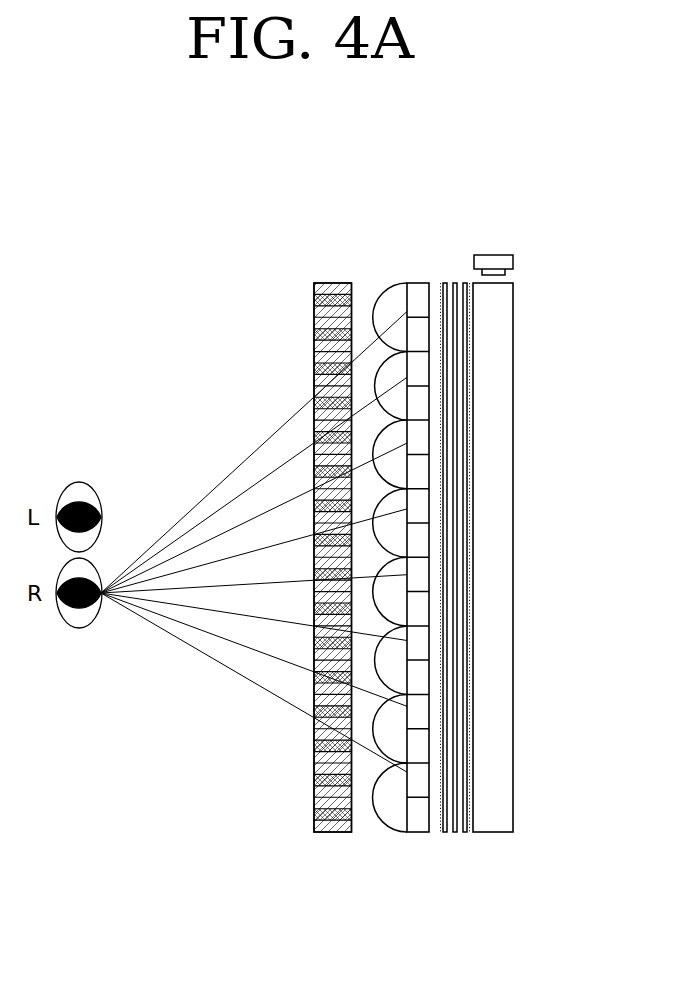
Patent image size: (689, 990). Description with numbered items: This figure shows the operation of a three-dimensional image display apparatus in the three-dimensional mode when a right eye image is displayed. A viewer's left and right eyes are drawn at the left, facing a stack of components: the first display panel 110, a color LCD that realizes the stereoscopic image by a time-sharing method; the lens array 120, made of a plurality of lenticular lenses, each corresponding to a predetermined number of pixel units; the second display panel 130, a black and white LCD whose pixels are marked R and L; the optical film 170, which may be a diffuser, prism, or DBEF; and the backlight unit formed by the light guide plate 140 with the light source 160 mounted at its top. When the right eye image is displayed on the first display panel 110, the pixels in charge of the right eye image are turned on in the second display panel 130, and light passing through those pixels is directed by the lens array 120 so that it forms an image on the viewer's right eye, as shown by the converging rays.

The first display panel 110 is at (333, 283).
The lens array 120 is at (383, 284).
The second display panel 130 is at (413, 283).
The optical film 170 is at (455, 283).
The light guide plate 140 is at (509, 328).
The light source 160 is at (509, 262).